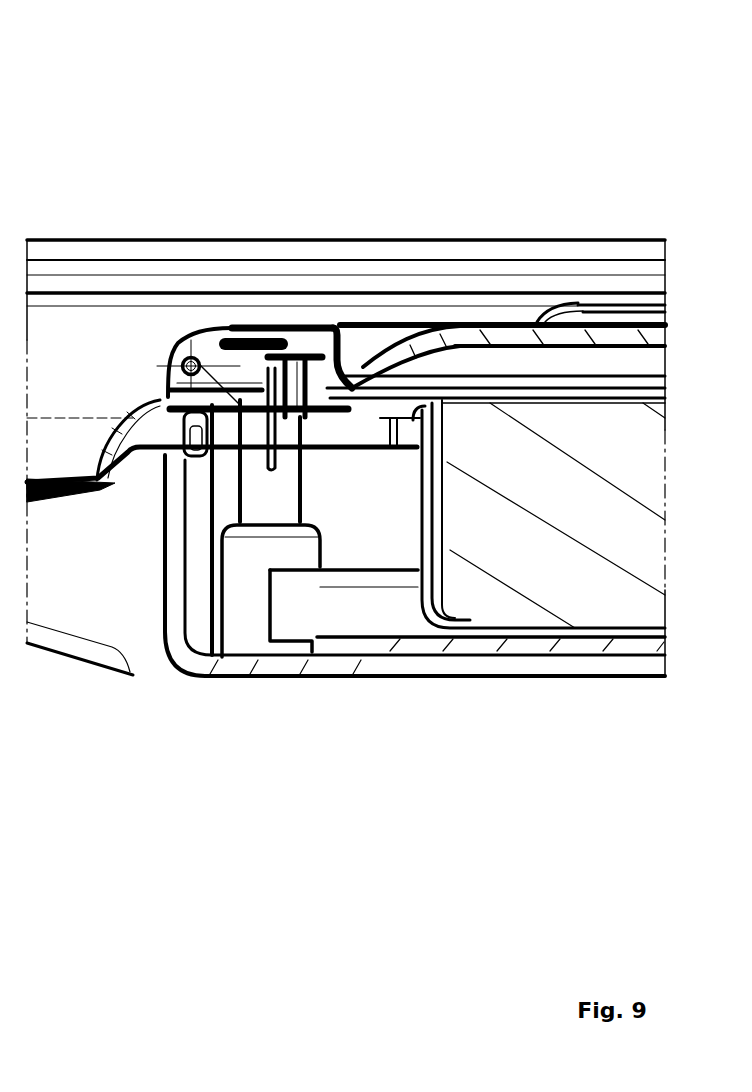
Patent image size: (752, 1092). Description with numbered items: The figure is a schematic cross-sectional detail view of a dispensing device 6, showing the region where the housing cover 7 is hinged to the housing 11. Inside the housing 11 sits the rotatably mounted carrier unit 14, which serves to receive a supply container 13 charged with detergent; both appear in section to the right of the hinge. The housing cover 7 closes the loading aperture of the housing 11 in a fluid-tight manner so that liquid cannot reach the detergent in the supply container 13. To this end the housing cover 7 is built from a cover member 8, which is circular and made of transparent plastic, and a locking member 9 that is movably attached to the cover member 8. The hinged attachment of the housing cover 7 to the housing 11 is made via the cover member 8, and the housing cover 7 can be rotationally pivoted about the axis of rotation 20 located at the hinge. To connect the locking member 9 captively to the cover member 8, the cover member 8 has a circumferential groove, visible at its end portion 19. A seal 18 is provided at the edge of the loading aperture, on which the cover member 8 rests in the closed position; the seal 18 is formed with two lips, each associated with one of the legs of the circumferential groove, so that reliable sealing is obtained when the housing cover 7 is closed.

The dispensing device 6 is at (328, 752).
The housing cover 7 is at (458, 347).
The cover member 8 is at (413, 345).
The locking member 9 is at (295, 325).
The housing 11 is at (218, 663).
The supply container 13 is at (581, 592).
The carrier unit 14 is at (428, 530).
The seal 18 is at (297, 358).
The end portion 19 is at (246, 354).
The axis of rotation 20 is at (191, 365).